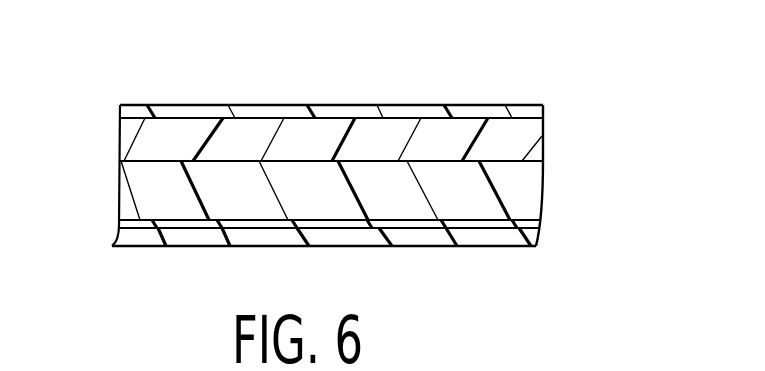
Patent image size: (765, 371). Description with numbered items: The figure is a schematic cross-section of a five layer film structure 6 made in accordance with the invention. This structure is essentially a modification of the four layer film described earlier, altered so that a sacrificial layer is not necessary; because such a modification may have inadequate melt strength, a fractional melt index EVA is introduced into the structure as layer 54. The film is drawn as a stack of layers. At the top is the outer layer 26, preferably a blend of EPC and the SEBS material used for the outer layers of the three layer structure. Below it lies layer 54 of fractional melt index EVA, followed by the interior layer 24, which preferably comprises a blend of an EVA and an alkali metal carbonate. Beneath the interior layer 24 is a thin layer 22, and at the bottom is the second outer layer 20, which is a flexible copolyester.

The five layer film structure 6 is at (326, 149).
The outer layer 26 is at (121, 113).
The layer 54 is at (120, 140).
The interior layer 24 is at (542, 196).
The bottom thin layer 22 is at (120, 222).
The second outer layer 20 is at (538, 242).